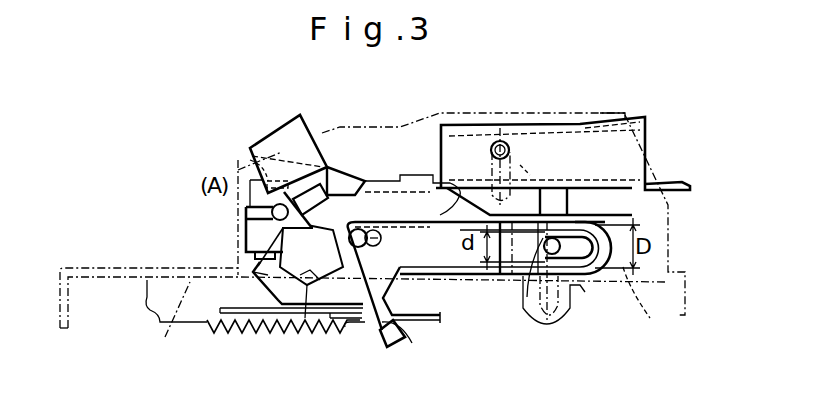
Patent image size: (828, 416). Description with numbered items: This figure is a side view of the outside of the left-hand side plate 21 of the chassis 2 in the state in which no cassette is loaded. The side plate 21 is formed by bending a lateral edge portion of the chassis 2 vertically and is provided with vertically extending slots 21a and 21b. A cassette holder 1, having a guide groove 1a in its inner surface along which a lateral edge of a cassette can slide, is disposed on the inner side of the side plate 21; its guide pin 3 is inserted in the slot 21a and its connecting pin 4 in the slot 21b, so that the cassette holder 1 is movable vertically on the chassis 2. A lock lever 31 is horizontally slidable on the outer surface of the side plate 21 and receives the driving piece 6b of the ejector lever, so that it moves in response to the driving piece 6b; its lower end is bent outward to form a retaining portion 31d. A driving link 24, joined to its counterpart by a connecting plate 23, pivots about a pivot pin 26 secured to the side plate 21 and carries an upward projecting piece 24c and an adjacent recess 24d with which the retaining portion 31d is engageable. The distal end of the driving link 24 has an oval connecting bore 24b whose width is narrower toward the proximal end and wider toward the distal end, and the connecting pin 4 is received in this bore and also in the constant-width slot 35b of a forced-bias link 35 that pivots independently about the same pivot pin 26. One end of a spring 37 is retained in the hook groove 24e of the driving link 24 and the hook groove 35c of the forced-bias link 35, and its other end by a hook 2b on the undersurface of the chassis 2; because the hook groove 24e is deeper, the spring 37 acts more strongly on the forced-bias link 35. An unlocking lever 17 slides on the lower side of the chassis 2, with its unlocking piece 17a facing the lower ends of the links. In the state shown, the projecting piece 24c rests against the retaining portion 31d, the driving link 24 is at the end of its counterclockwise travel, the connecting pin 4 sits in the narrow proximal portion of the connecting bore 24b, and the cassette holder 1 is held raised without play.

The cassette holder 1 is at (583, 135).
The guide groove 1a is at (632, 158).
The chassis 2 is at (88, 268).
The hook 2b is at (147, 292).
The guide pin 3 is at (502, 141).
The connecting pin 4 is at (527, 282).
The driving piece 6b is at (264, 160).
The unlocking lever 17 is at (440, 307).
The unlocking piece 17a is at (330, 320).
The side plate 21 is at (378, 130).
The slot 21a is at (520, 172).
The slot 21b is at (586, 295).
The connecting plate 23 is at (286, 122).
The driving link 24 is at (363, 184).
The connecting bore 24b is at (650, 320).
The projecting piece 24c is at (268, 283).
The recess 24d is at (299, 325).
The hook groove 24e is at (383, 332).
The pivot pin 26 is at (382, 243).
The lock lever 31 is at (258, 232).
The retaining portion 31d is at (250, 253).
The forced-bias link 35 is at (382, 275).
The slot 35b is at (590, 222).
The hook groove 35c is at (400, 326).
The spring 37 is at (248, 334).